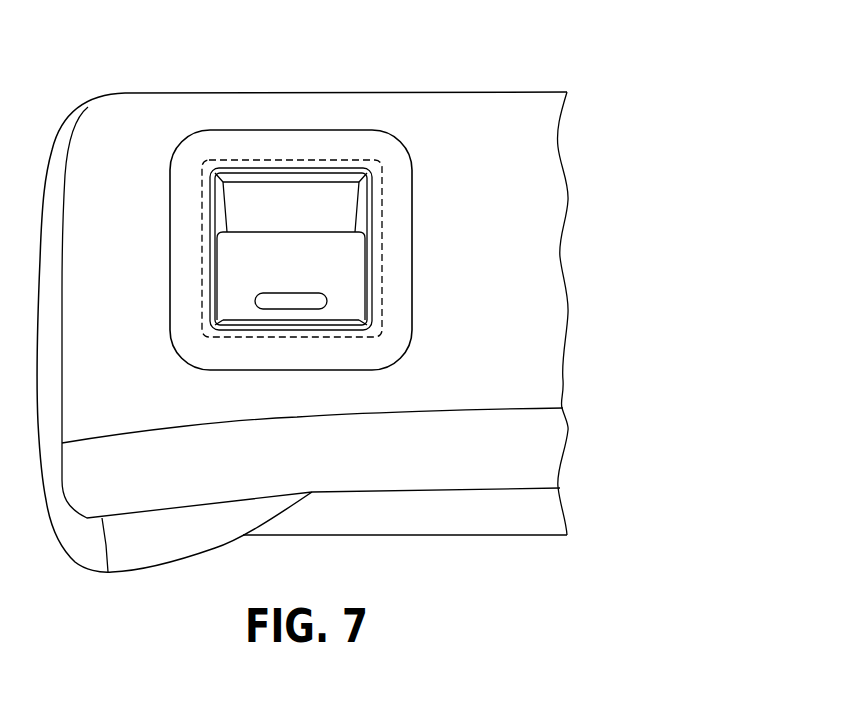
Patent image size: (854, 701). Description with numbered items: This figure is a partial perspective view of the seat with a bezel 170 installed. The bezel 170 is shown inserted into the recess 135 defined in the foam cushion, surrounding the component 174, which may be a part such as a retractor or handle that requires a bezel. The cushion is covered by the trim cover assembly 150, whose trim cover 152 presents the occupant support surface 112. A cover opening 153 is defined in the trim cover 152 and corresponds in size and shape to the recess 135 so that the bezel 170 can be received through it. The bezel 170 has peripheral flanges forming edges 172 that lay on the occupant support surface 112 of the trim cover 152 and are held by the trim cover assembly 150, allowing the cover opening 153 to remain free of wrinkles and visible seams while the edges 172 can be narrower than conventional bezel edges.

The trim cover assembly 150 is at (128, 167).
The occupant support surface 112 is at (126, 293).
The trim cover 152 is at (501, 251).
The bezel 170 is at (323, 130).
The recess 135 is at (263, 160).
The cover opening 153 is at (217, 297).
The component 174 is at (328, 275).
The edges 172 is at (202, 340).